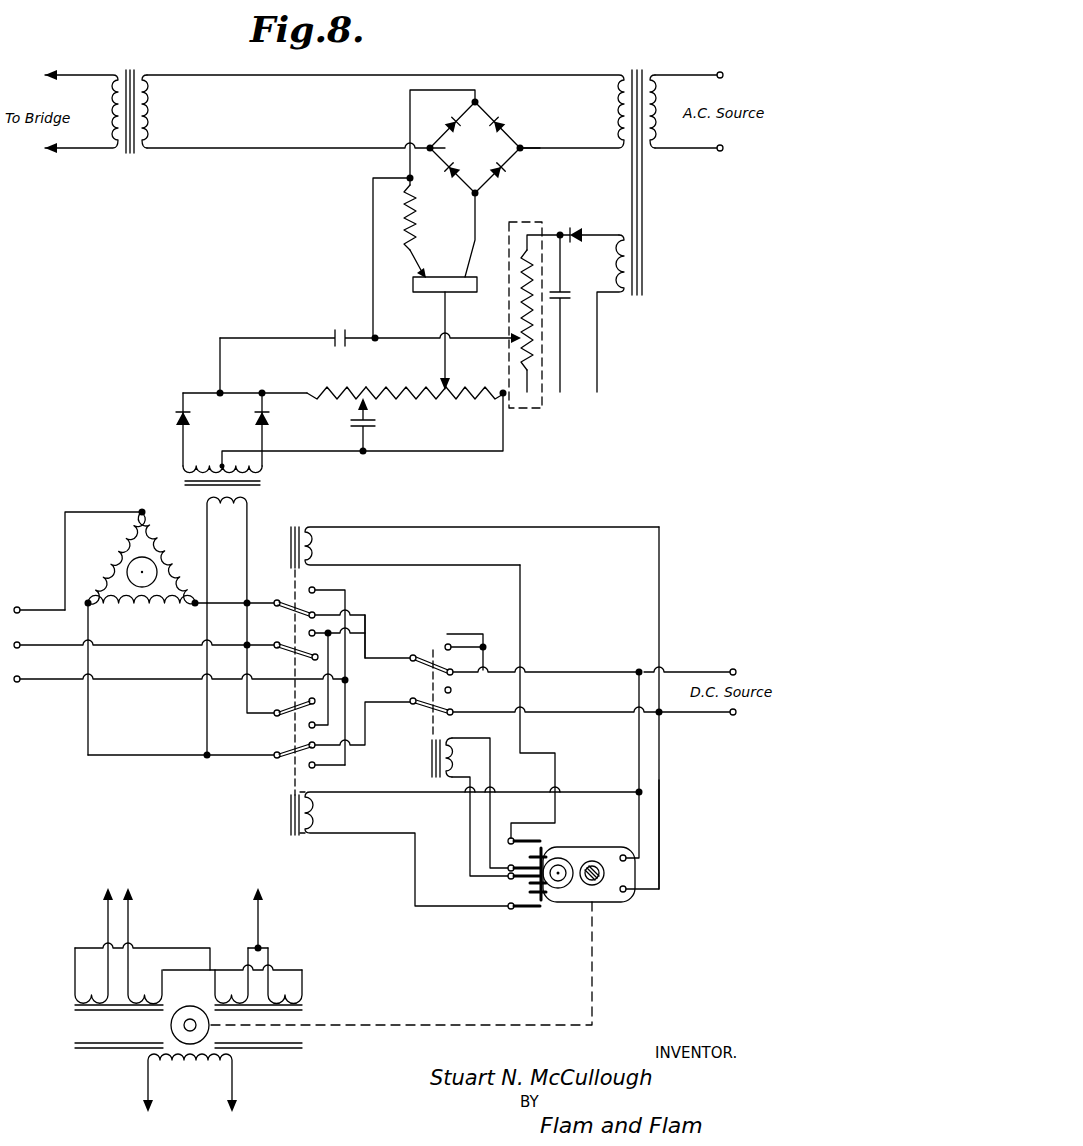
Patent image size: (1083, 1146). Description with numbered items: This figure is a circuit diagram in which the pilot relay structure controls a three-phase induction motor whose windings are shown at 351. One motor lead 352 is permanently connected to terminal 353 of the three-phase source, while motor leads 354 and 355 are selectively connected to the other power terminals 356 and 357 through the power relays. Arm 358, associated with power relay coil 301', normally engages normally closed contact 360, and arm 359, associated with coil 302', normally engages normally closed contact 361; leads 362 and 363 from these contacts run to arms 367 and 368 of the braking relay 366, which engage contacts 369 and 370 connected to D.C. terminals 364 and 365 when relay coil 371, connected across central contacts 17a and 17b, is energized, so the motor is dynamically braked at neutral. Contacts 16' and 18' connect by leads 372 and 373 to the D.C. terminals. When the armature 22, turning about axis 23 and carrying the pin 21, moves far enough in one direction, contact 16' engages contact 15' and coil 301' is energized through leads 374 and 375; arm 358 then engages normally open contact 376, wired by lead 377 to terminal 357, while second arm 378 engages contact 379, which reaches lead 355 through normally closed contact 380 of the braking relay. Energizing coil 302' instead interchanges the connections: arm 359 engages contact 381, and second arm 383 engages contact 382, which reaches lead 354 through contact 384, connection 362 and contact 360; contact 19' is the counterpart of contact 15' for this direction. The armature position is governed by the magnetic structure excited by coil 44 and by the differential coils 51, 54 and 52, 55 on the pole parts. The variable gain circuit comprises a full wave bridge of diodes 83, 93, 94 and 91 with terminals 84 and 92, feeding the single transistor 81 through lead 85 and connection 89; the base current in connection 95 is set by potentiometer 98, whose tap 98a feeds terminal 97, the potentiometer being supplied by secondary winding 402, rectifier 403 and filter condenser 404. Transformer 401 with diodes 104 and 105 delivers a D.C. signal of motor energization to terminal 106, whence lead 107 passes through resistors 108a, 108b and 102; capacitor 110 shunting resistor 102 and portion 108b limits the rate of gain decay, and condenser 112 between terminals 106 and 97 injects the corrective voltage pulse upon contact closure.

The diode 83 is at (447, 120).
The diode 93 is at (503, 120).
The diode 94 is at (447, 176).
The diode 91 is at (505, 172).
The terminal 92 is at (524, 146).
The terminal 84 is at (445, 148).
The lead 85 is at (408, 165).
The terminal 97 is at (408, 186).
The lead 89 is at (470, 253).
The transistor 81 is at (470, 292).
The potentiometer 98 is at (532, 222).
The rectifier 403 is at (580, 232).
The secondary winding 402 is at (630, 262).
The filter condenser 404 is at (565, 292).
The condenser 112 is at (340, 330).
The adjustable tap 98a is at (416, 338).
The base connection 95 is at (450, 360).
The lead 107 is at (224, 357).
The terminal 106 is at (216, 390).
The diode 104 is at (175, 420).
The diode 105 is at (254, 422).
The resistor portion 108a is at (344, 403).
The resistor portion 108b is at (392, 403).
The resistor 102 is at (457, 403).
The capacitor 110 is at (372, 428).
The transformer 401 is at (275, 480).
The three-phase induction motor 351 is at (105, 535).
The motor lead 352 is at (63, 558).
The three-phase power terminal 353 is at (20, 614).
The motor lead 355 is at (90, 628).
The three-phase power terminal 356 is at (17, 650).
The three-phase power terminal 357 is at (17, 684).
The lead 377 is at (145, 682).
The motor lead 354 is at (278, 585).
The arm 358 is at (295, 612).
The normally open contact 379 is at (316, 634).
The normally closed contact 360 is at (300, 625).
The second arm 378 is at (297, 655).
The normally open contact 376 is at (316, 588).
The lead 362 is at (362, 612).
The second arm 383 is at (302, 704).
The normally closed contact 361 is at (305, 720).
The normally open contact 382 is at (316, 726).
The arm 359 is at (300, 750).
The lead 363 is at (366, 726).
The contact 381 is at (302, 768).
The arm 367 is at (412, 664).
The contact 369 is at (541, 677).
The contact 384 is at (447, 634).
The arm 368 is at (412, 697).
The normally closed contact 380 is at (467, 694).
The contact 370 is at (551, 719).
The power relay coil 301' is at (475, 547).
The power relay coil 302' is at (465, 849).
The lead 375 is at (522, 585).
The lead 374 is at (661, 575).
The lead 373 is at (661, 780).
The lead 372 is at (637, 745).
The D.C. power terminal 364 is at (734, 668).
The D.C. power terminal 365 is at (733, 716).
The braking relay 366 is at (424, 760).
The relay coil 371 is at (453, 765).
The contact 15' is at (552, 830).
The contact 16' is at (488, 856).
The central contact 17a is at (546, 856).
The central contact 17b is at (530, 886).
The contact 18' is at (518, 918).
The contact 19' is at (539, 921).
The pin 21 is at (566, 885).
The relay armature 22 is at (600, 897).
The axis 23 is at (604, 873).
The coil 52 is at (90, 985).
The coil 55 is at (143, 985).
The coil 51 is at (232, 985).
The coil 54 is at (290, 990).
The coil 44 is at (195, 1065).